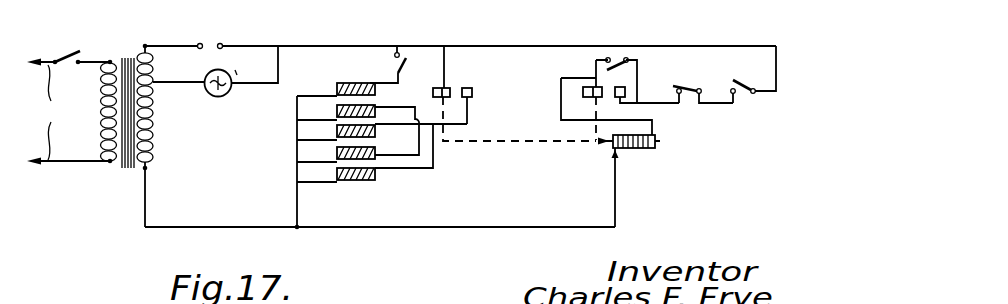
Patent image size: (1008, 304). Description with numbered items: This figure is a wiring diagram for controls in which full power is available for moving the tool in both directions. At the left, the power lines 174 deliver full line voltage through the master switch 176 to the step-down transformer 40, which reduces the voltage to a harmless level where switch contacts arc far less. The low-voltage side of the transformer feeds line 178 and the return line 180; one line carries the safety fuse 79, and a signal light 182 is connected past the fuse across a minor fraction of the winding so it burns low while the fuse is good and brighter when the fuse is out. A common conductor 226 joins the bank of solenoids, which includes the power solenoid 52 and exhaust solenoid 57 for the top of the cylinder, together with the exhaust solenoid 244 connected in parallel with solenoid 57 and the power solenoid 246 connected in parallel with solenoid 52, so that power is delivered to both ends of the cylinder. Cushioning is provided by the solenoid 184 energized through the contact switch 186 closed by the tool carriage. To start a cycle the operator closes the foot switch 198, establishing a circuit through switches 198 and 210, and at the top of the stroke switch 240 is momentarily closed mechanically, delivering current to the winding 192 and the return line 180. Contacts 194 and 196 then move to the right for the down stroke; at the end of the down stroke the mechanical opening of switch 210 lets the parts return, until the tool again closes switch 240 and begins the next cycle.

The master switch 176 is at (66, 57).
The power lines 174 is at (68, 112).
The step-down transformer 40 is at (124, 167).
The line 178 is at (171, 44).
The safety fuse 79 is at (203, 45).
The signal light 182 is at (224, 96).
The common conductor 226 is at (297, 197).
The return line 180 is at (420, 227).
The solenoid 184 is at (348, 82).
The power solenoid 52 is at (378, 111).
The exhaust solenoid 57 is at (377, 129).
The power solenoid for the bottom of the cylinder 246 is at (377, 152).
The exhaust solenoid for the bottom of the cylinder 244 is at (381, 174).
The contact switch 186 is at (404, 56).
The contact 194 is at (449, 88).
The contact 196 is at (592, 97).
The solenoid 192 is at (655, 148).
The switch 240 is at (614, 66).
The switch 210 is at (690, 88).
The foot switch 198 is at (743, 95).